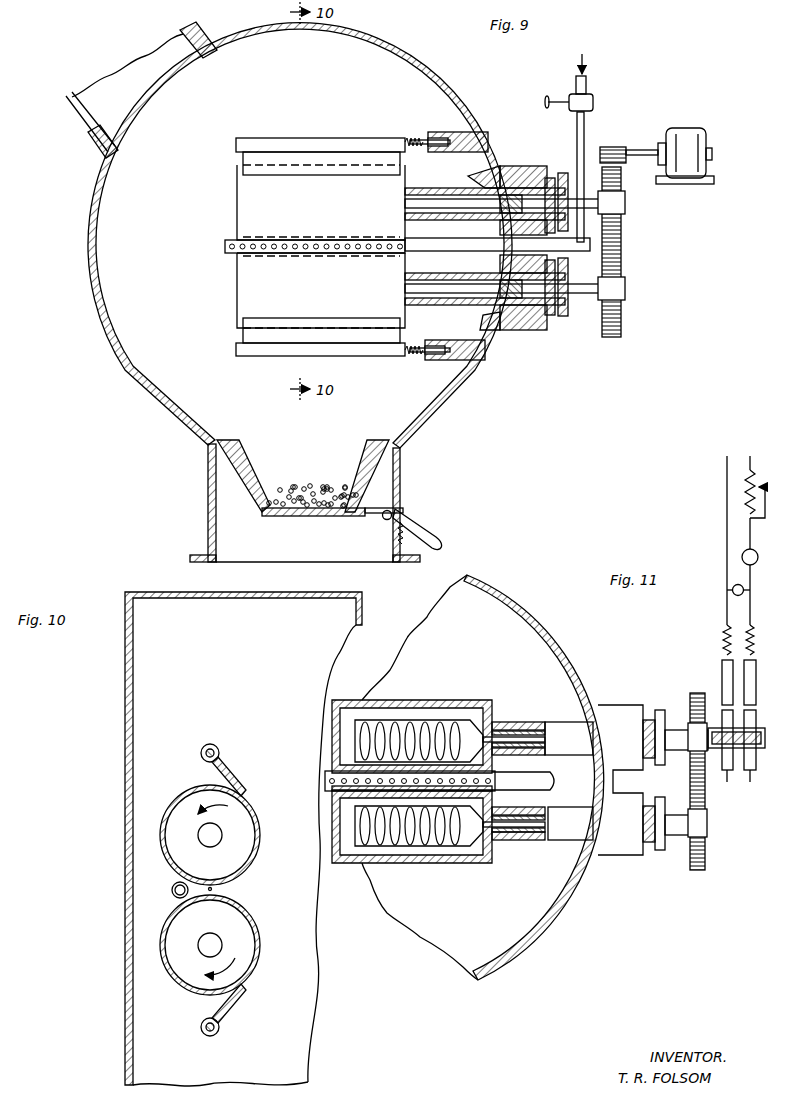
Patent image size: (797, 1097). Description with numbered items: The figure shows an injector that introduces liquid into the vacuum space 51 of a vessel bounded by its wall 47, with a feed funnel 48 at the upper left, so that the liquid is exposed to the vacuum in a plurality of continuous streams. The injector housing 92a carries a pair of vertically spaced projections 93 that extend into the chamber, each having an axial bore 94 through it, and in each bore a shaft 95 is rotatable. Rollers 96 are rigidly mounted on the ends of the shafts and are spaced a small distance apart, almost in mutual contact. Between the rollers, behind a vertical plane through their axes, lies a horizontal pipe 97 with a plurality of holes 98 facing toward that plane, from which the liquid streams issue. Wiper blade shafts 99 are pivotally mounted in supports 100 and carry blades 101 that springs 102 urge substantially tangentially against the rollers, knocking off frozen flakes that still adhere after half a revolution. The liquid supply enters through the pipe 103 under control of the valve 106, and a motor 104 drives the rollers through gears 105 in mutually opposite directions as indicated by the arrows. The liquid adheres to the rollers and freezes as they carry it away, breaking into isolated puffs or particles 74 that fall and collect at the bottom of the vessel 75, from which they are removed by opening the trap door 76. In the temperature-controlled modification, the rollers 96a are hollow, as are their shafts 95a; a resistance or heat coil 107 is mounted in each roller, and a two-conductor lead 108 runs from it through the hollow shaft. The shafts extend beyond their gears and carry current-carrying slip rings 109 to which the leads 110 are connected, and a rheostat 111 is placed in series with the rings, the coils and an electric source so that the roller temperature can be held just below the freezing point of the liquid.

In FIG. 9, the vessel wall 47 is at (437, 72).
In FIG. 11, the vessel wall 47 is at (540, 618).
In FIG. 9, the feed funnel 48 is at (178, 30).
In FIG. 9, the vacuum space 51 is at (125, 349).
In FIG. 10, the vacuum space 51 is at (138, 706).
In FIG. 11, the vacuum space 51 is at (575, 660).
In FIG. 9, the particle 74 is at (340, 485).
In FIG. 9, the bottom of the vessel 75 is at (240, 478).
In FIG. 9, the trap door 76 is at (330, 517).
In FIG. 9, the injector housing 92a is at (535, 320).
In FIG. 11, the injector housing 92a is at (626, 857).
In FIG. 9, the projections 93 is at (435, 188).
In FIG. 11, the projections 93 is at (558, 722).
In FIG. 9, the axial bore 94 is at (465, 196).
In FIG. 9, the shaft 95 is at (446, 208).
In FIG. 10, the shaft 95 is at (222, 843).
In FIG. 11, the hollow shaft 95a is at (680, 694).
In FIG. 9, the rollers 96 is at (243, 204).
In FIG. 10, the rollers 96 is at (178, 800).
In FIG. 11, the hollow rollers 96a is at (425, 700).
In FIG. 9, the horizontal pipe 97 is at (226, 246).
In FIG. 10, the horizontal pipe 97 is at (172, 891).
In FIG. 11, the horizontal pipe 97 is at (556, 788).
In FIG. 9, the holes 98 is at (310, 240).
In FIG. 10, the holes 98 is at (206, 889).
In FIG. 11, the holes 98 is at (408, 782).
In FIG. 9, the wiper blade shafts 99 is at (426, 140).
In FIG. 10, the wiper blade shafts 99 is at (208, 745).
In FIG. 9, the supports 100 is at (452, 138).
In FIG. 10, the supports 100 is at (218, 756).
In FIG. 9, the blades 101 is at (357, 168).
In FIG. 10, the blades 101 is at (240, 790).
In FIG. 9, the springs 102 is at (412, 132).
In FIG. 9, the pipe 103 is at (588, 130).
In FIG. 9, the motor 104 is at (690, 132).
In FIG. 9, the gears 105 is at (626, 250).
In FIG. 11, the gears 105 is at (708, 806).
In FIG. 9, the valve 106 is at (592, 100).
In FIG. 11, the heat coil 107 is at (450, 722).
In FIG. 11, the two-conductor lead 108 is at (520, 747).
In FIG. 11, the slip rings 109 is at (732, 778).
In FIG. 11, the leads 110 is at (724, 680).
In FIG. 11, the rheostat 111 is at (745, 494).